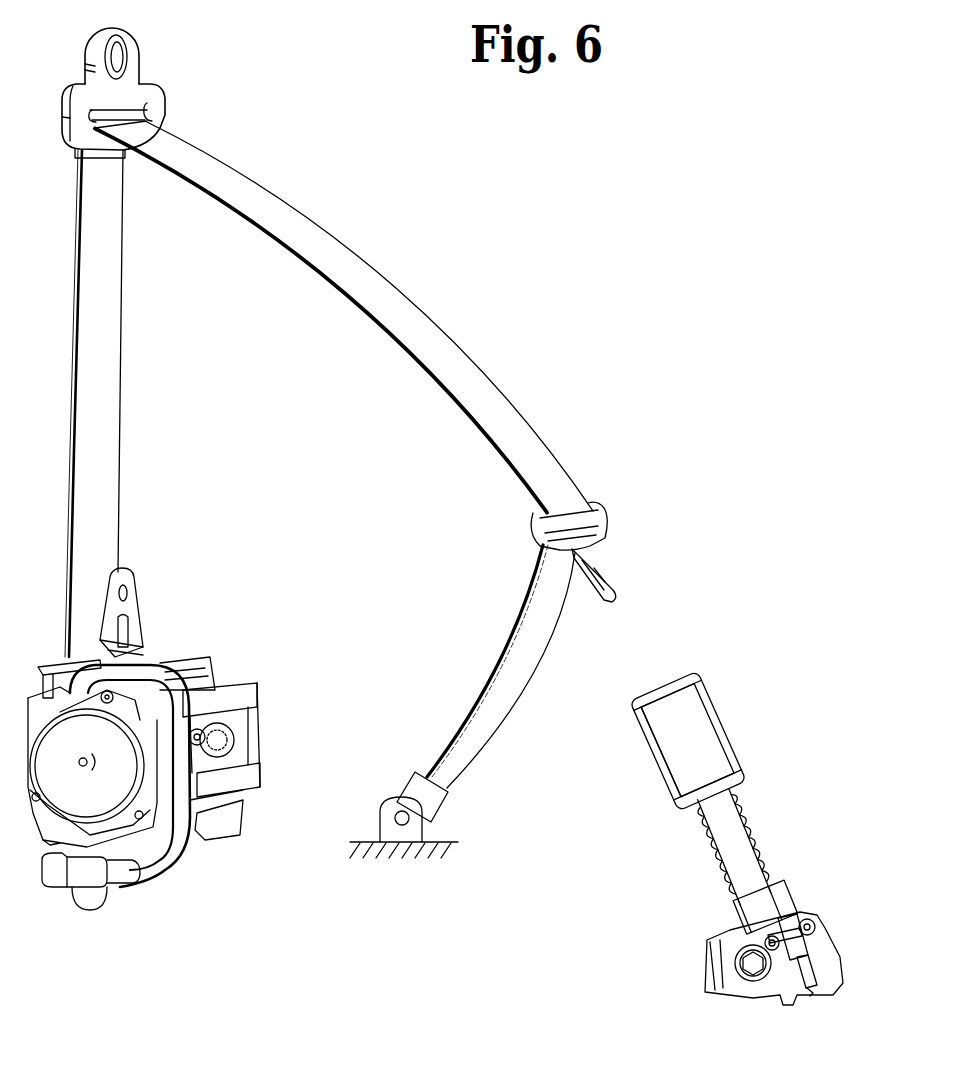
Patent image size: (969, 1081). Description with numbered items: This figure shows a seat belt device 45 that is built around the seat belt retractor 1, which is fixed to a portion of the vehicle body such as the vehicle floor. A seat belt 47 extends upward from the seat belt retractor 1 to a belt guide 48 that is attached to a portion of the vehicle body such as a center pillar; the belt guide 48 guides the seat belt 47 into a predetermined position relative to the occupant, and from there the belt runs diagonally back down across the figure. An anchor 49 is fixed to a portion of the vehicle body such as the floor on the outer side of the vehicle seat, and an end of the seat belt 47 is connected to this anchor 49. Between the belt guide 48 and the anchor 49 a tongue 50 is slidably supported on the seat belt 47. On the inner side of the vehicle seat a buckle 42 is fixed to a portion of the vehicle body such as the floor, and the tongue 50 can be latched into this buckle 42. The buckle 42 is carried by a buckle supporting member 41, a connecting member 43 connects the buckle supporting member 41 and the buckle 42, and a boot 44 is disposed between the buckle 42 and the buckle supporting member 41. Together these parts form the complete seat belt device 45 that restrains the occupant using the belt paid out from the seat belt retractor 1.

The seat belt retractor 1 is at (213, 673).
The buckle supporting member 41 is at (790, 930).
The buckle 42 is at (708, 752).
The connecting member 43 is at (735, 843).
The boot 44 is at (743, 807).
The seat belt device 45 is at (553, 240).
The seat belt 47 is at (450, 378).
The belt guide 48 is at (153, 93).
The anchor 49 is at (380, 815).
The tongue 50 is at (608, 550).